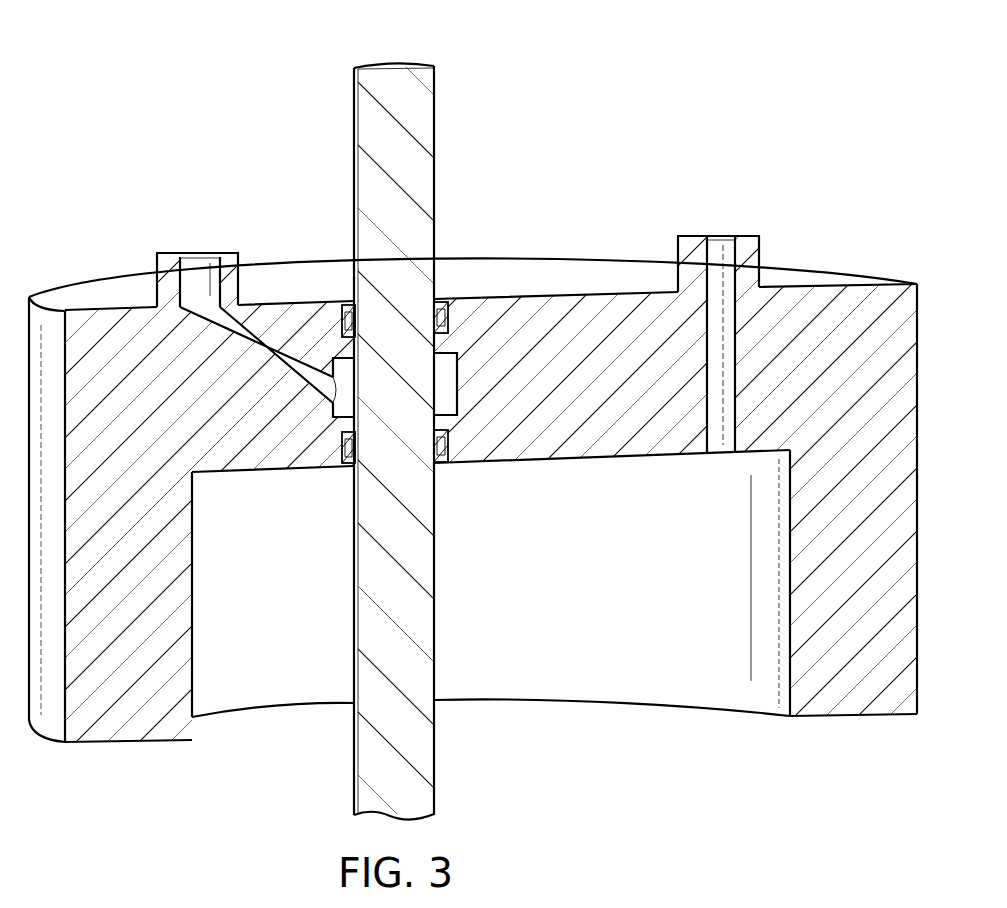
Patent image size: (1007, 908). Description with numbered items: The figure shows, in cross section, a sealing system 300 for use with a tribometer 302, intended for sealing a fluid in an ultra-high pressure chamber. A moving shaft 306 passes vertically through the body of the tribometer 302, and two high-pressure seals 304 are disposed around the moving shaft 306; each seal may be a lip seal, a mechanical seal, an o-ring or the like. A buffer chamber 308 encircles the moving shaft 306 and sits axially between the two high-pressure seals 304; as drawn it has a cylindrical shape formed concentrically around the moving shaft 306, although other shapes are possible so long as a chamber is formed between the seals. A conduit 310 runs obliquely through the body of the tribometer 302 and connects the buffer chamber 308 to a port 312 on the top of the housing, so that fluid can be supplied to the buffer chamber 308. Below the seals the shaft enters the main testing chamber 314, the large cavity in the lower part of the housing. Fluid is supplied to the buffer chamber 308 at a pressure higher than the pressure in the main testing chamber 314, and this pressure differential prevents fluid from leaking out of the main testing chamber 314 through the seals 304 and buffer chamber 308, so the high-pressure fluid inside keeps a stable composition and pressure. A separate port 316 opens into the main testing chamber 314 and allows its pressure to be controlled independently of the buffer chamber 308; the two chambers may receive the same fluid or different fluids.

The sealing system 300 is at (655, 79).
The tribometer 302 is at (88, 279).
The high-pressure seals 304 is at (452, 316).
The moving shaft 306 is at (353, 743).
The buffer chamber 308 is at (458, 388).
The conduit 310 is at (278, 335).
The port 312 is at (197, 252).
The main testing chamber 314 is at (597, 607).
The port 316 is at (717, 234).